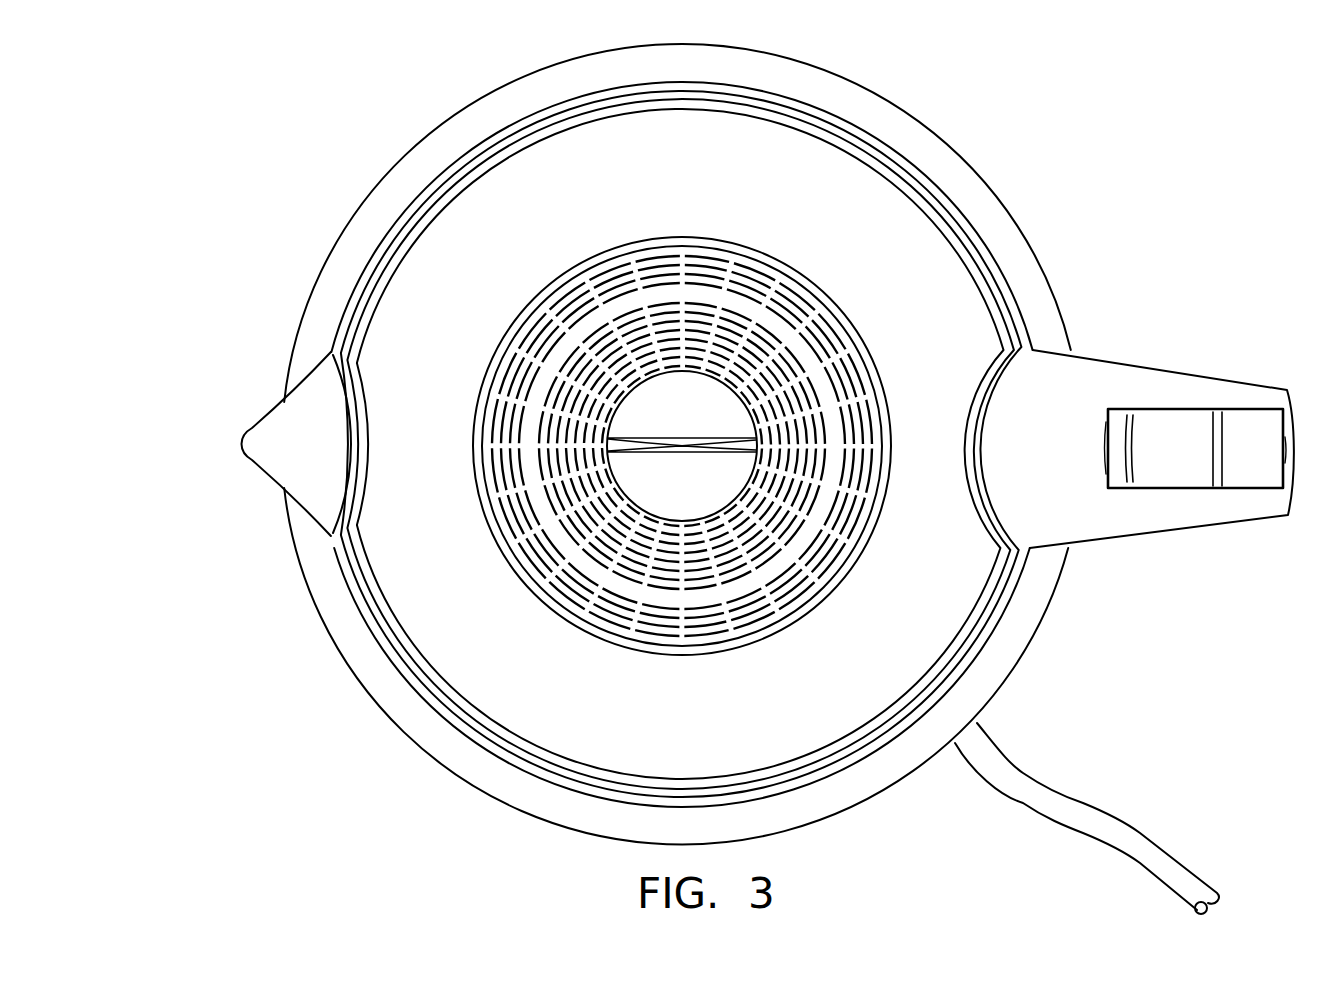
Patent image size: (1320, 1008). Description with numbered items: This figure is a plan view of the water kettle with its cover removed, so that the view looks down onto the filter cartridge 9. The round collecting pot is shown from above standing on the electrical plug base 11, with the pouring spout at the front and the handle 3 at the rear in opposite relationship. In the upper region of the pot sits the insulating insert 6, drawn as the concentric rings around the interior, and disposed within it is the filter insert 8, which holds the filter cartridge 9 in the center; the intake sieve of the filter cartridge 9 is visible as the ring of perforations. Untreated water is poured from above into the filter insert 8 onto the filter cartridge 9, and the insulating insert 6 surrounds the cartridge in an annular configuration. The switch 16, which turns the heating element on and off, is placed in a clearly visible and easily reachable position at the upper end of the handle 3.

The handle 3 is at (1110, 372).
The insulating insert 6 is at (972, 243).
The filter insert 8 is at (796, 184).
The filter cartridge 9 is at (815, 390).
The electrical plug base 11 is at (330, 293).
The switch 16 is at (1250, 432).